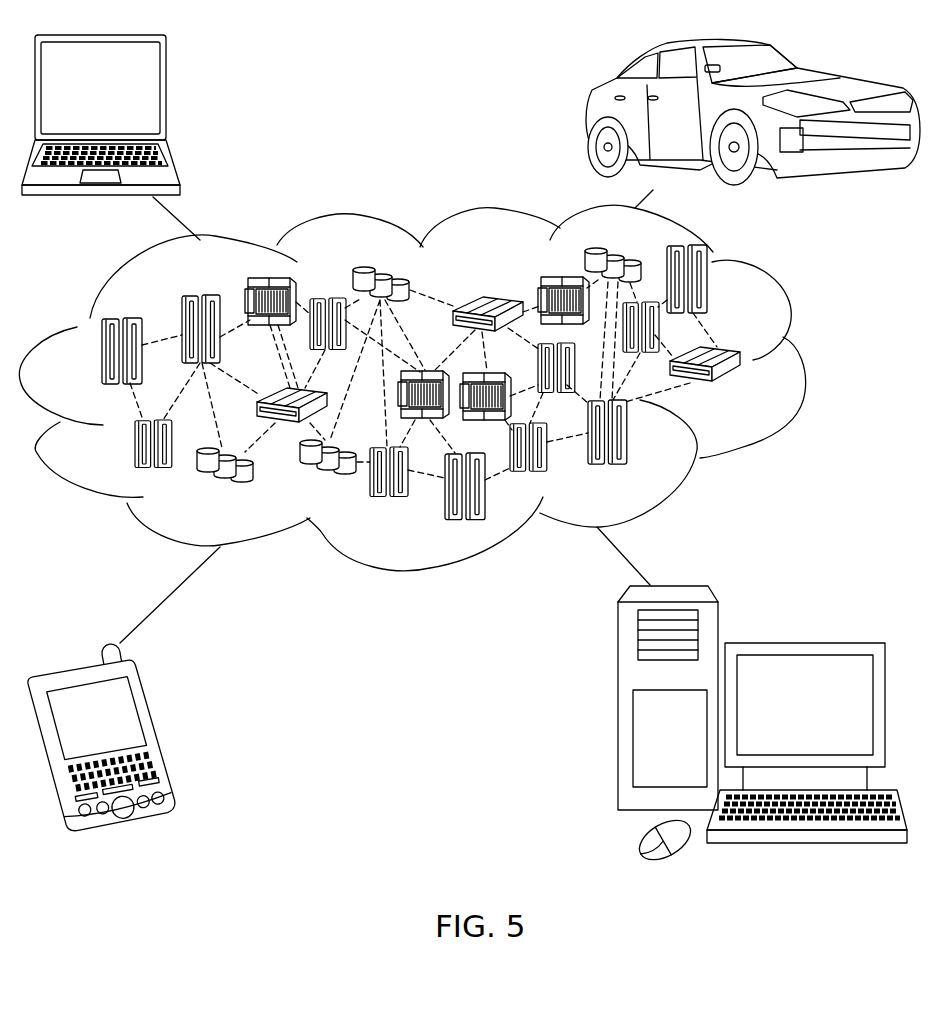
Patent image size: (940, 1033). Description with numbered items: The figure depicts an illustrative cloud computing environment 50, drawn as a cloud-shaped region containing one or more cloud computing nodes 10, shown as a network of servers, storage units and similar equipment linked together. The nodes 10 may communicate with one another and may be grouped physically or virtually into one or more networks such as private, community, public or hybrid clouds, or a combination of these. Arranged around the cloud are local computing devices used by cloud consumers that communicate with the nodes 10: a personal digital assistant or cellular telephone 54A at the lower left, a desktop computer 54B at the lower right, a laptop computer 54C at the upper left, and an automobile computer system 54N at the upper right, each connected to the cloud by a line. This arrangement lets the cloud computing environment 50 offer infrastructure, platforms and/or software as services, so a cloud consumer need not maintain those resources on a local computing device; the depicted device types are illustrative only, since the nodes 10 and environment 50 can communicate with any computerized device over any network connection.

The laptop computer 54C is at (167, 97).
The automobile computer system 54N is at (590, 110).
The cloud computing environment 50 is at (802, 363).
The cloud computing node 10 is at (750, 392).
The personal digital assistant or cellular telephone 54A is at (160, 732).
The desktop computer 54B is at (800, 643).